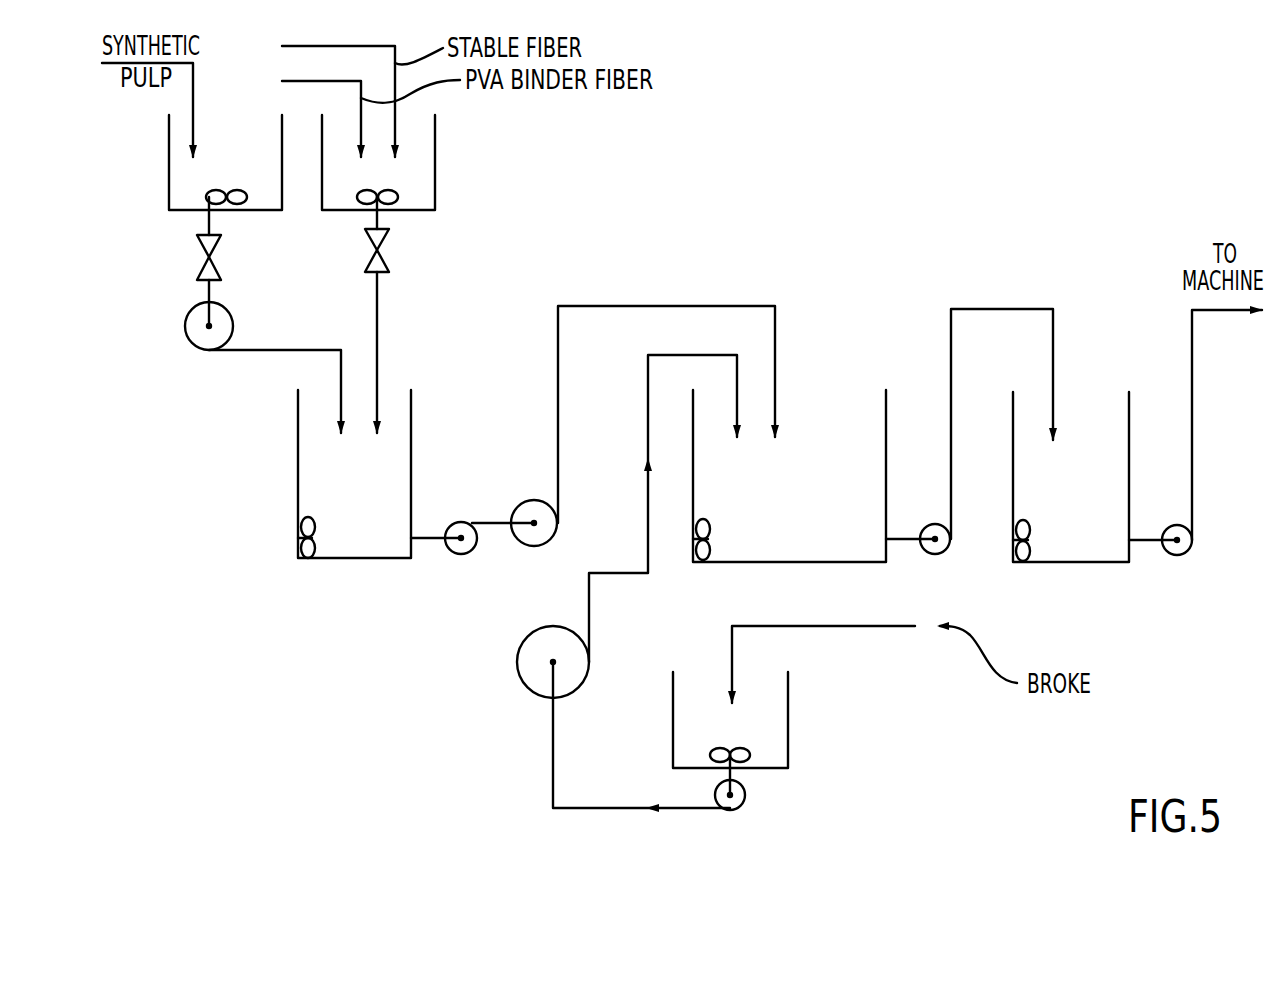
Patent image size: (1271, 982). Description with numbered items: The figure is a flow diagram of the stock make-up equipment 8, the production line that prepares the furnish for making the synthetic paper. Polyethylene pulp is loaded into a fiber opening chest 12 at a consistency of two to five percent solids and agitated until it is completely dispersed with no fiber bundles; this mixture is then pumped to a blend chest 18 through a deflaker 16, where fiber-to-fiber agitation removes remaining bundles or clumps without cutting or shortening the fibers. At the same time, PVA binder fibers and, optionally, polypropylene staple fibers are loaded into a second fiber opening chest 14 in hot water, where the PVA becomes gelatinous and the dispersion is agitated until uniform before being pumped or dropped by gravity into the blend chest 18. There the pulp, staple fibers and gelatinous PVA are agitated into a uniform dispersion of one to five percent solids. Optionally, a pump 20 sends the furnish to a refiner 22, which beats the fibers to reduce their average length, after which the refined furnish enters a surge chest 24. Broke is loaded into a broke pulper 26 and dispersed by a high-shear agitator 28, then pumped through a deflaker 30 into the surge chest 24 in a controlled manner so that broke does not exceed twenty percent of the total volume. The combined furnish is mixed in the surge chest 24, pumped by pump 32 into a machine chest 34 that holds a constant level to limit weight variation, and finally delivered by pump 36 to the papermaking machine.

The stock make-up equipment 8 is at (752, 241).
The fiber opening chest 12 is at (168, 166).
The fiber opening chest 14 is at (436, 164).
The deflaker 16 is at (185, 328).
The blend chest 18 is at (412, 418).
The pump 20 is at (449, 527).
The refiner 22 is at (530, 547).
The surge chest 24 is at (790, 563).
The broke pulper 26 is at (789, 717).
The high-shear agitator 28 is at (746, 794).
The deflaker 30 is at (517, 668).
The pump 32 is at (943, 554).
The machine chest 34 is at (1080, 563).
The pump 36 is at (1184, 556).